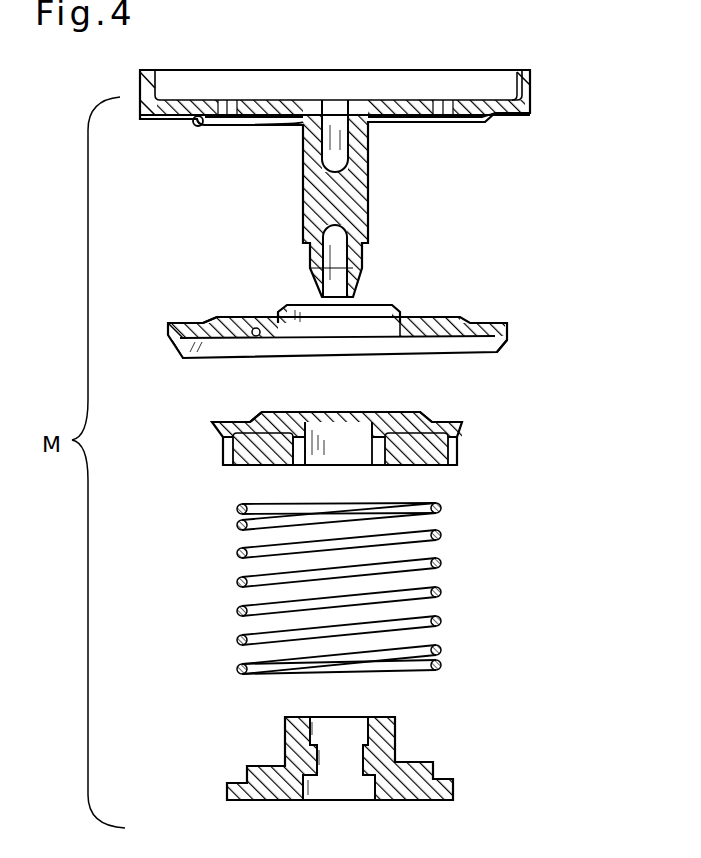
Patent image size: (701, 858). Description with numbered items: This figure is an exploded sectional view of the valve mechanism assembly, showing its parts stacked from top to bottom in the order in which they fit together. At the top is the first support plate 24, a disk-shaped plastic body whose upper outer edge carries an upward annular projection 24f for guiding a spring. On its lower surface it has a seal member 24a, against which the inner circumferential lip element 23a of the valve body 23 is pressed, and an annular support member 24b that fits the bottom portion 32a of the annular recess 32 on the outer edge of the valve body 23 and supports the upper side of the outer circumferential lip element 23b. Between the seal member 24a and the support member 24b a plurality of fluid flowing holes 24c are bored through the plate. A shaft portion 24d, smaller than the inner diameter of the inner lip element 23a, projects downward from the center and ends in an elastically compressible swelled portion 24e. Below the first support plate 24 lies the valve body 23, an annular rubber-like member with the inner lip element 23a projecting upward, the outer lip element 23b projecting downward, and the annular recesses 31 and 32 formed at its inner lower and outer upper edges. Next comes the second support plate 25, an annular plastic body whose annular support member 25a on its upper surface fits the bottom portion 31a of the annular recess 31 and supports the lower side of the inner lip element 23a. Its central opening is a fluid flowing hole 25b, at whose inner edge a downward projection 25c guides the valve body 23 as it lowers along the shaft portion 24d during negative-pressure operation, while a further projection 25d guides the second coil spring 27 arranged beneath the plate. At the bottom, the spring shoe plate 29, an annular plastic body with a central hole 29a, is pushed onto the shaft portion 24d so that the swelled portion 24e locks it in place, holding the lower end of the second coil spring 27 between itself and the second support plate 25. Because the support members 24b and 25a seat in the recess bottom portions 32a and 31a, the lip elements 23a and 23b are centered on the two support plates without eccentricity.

The first support plate 24 is at (382, 152).
The seal member 24a is at (403, 118).
The annular support member 24b is at (198, 128).
The fluid flowing holes 24c is at (228, 110).
The shaft portion 24d is at (357, 183).
The swelled portion 24e is at (353, 275).
The annular projection 24f is at (523, 77).
The valve body 23 is at (374, 318).
The inner circumferential lip element 23a is at (397, 317).
The outer circumferential lip element 23b is at (505, 352).
The annular recess 31 is at (410, 332).
The bottom portion 31a is at (258, 328).
The annular recess 32 is at (178, 322).
The bottom portion 32a is at (201, 322).
The second support plate 25 is at (365, 443).
The annular support member 25a is at (257, 420).
The fluid flowing hole 25b is at (352, 432).
The projection 25c is at (298, 465).
The projection 25d is at (227, 452).
The second coil spring 27 is at (470, 566).
The spring shoe plate 29 is at (379, 782).
The bore of base 29a is at (340, 765).